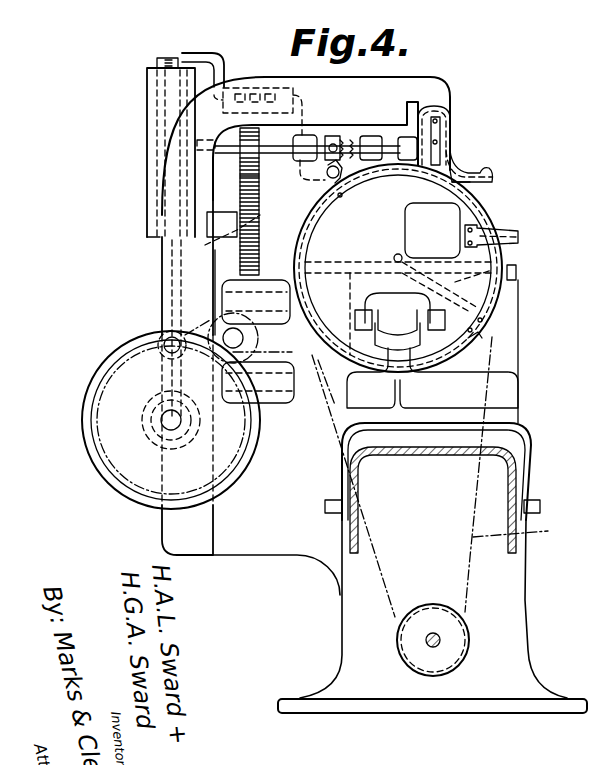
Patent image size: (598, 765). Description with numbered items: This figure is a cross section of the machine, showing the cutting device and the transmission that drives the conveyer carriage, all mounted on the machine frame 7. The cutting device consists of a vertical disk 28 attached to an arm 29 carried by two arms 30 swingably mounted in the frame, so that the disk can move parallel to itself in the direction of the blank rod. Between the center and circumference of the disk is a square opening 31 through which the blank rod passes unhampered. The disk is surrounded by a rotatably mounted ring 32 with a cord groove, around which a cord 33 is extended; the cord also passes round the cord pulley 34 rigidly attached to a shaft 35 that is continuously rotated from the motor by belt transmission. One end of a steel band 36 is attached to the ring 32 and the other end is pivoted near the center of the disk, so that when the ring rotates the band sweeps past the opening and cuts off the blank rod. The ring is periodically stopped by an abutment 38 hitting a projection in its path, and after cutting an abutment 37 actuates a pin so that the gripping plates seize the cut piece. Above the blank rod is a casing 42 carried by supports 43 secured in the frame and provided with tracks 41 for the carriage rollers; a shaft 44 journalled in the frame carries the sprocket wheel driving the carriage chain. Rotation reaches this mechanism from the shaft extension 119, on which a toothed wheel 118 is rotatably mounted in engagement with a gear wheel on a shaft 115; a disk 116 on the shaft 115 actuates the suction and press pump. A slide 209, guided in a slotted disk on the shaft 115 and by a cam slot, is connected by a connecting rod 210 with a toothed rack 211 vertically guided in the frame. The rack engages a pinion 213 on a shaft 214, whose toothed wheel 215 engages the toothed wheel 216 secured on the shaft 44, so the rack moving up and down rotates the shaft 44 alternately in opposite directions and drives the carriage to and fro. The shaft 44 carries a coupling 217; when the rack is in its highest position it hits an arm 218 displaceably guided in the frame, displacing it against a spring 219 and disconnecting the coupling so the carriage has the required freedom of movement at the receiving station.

The machine frame 7 is at (527, 602).
The vertical disk 28 is at (398, 268).
The arm 29 is at (432, 312).
The arms 30 is at (405, 383).
The square opening 31 is at (480, 238).
The ring 32 is at (472, 220).
The cord 33 is at (532, 535).
The cord pulley 34 is at (468, 645).
The shaft 35 is at (426, 640).
The steel band 36 is at (520, 272).
The abutment 37 is at (482, 336).
The abutment 38 is at (455, 180).
The tracks 41 is at (492, 178).
The casing 42 is at (452, 134).
The supports 43 is at (425, 82).
The shaft 44 is at (285, 154).
The shaft 115 is at (170, 422).
The disk 116 is at (82, 420).
The toothed wheel 118 is at (262, 362).
The extension of the shaft 119 is at (237, 344).
The slide 209 is at (166, 338).
The connecting rod 210 is at (175, 290).
The toothed rack 211 is at (157, 60).
The pinion 213 is at (152, 196).
The shaft 214 is at (205, 240).
The toothed wheel 215 is at (259, 240).
The toothed wheel 216 is at (240, 172).
The coupling 217 is at (340, 136).
The arm 218 is at (222, 47).
The spring 219 is at (255, 90).